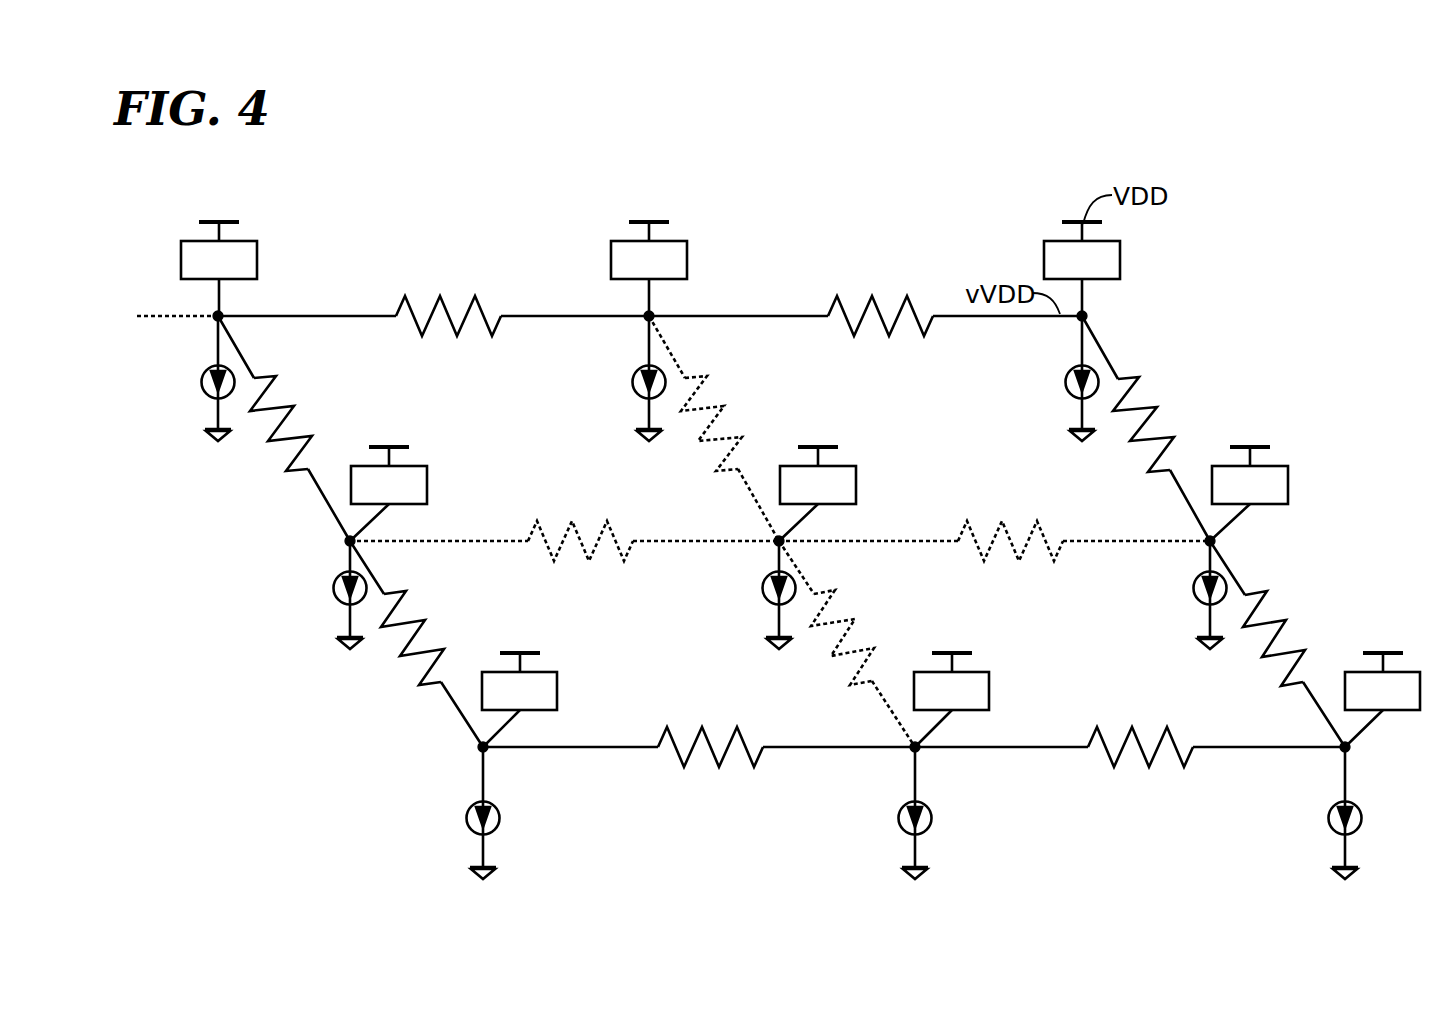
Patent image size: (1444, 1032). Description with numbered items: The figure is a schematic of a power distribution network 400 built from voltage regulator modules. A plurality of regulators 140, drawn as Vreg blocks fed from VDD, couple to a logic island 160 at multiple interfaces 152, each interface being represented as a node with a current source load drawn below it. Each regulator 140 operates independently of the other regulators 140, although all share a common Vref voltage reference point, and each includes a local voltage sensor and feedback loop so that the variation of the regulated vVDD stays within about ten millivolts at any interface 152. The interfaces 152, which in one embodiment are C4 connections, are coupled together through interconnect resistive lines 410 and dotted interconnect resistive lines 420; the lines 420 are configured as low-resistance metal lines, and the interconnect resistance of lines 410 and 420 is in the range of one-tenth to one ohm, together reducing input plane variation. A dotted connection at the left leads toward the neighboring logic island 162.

The power distribution network 400 is at (1357, 154).
The regulator 140 is at (258, 262).
The interface 152 is at (221, 314).
The logic island 160 is at (205, 380).
The logic island 162 is at (156, 316).
The interconnect resistive line 410 is at (440, 294).
The dotted interconnect resistive line 420 is at (571, 520).